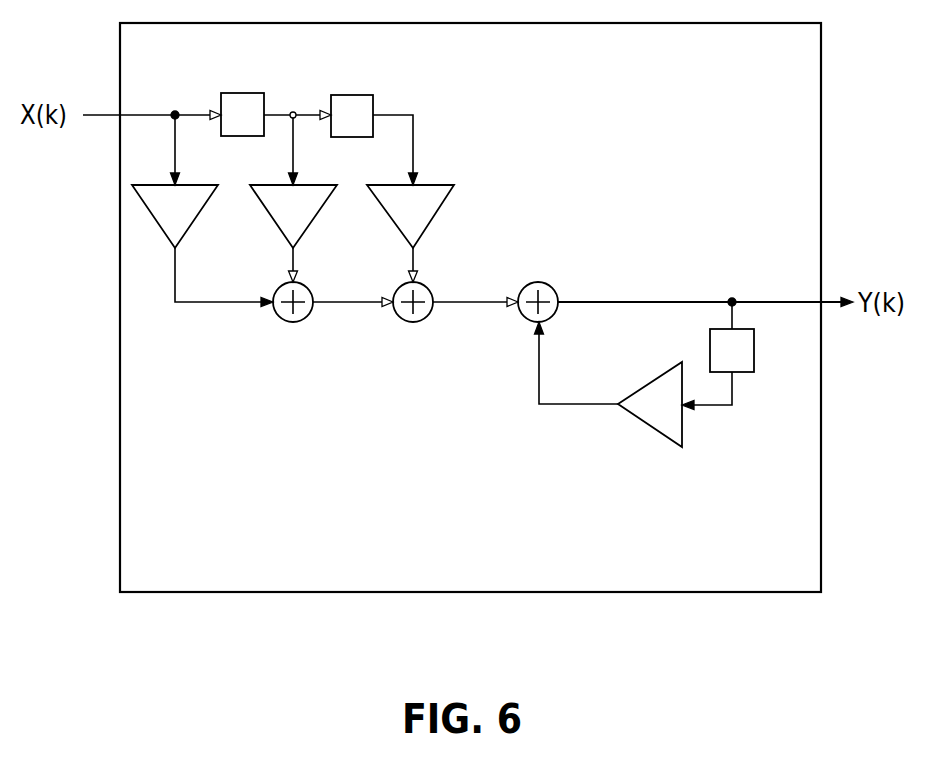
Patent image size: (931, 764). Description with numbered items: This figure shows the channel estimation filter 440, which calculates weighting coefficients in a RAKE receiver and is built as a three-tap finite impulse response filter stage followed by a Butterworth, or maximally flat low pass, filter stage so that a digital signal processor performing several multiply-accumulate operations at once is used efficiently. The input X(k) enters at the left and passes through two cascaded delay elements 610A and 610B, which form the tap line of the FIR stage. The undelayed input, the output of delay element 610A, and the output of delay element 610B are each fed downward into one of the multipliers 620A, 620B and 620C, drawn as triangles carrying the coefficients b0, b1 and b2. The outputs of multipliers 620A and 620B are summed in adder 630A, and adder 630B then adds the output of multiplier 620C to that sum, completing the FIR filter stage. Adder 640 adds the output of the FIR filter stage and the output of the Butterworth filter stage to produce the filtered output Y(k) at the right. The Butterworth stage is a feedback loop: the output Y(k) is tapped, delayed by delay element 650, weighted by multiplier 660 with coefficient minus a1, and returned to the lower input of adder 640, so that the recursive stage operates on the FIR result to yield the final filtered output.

The channel estimation filter 440 is at (410, 593).
The delay element 610A is at (242, 92).
The delay element 610B is at (351, 94).
The multiplier 620A is at (186, 230).
The multiplier 620B is at (304, 230).
The multiplier 620C is at (424, 230).
The adder 630A is at (293, 322).
The adder 630B is at (413, 322).
The adder 640 is at (541, 282).
The delay element 650 is at (746, 373).
The multiplier 660 is at (646, 384).